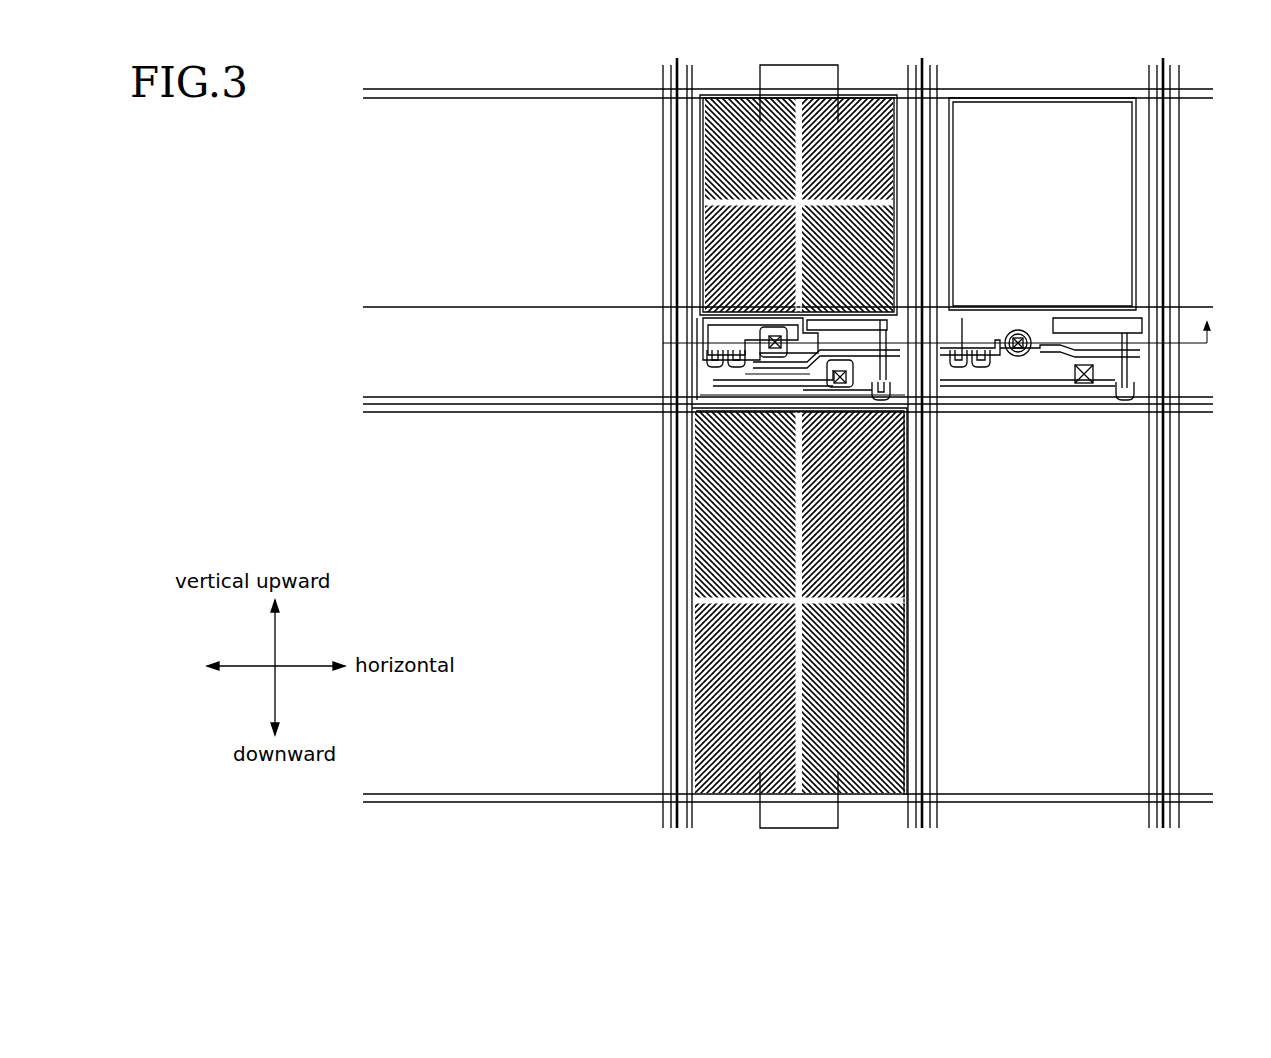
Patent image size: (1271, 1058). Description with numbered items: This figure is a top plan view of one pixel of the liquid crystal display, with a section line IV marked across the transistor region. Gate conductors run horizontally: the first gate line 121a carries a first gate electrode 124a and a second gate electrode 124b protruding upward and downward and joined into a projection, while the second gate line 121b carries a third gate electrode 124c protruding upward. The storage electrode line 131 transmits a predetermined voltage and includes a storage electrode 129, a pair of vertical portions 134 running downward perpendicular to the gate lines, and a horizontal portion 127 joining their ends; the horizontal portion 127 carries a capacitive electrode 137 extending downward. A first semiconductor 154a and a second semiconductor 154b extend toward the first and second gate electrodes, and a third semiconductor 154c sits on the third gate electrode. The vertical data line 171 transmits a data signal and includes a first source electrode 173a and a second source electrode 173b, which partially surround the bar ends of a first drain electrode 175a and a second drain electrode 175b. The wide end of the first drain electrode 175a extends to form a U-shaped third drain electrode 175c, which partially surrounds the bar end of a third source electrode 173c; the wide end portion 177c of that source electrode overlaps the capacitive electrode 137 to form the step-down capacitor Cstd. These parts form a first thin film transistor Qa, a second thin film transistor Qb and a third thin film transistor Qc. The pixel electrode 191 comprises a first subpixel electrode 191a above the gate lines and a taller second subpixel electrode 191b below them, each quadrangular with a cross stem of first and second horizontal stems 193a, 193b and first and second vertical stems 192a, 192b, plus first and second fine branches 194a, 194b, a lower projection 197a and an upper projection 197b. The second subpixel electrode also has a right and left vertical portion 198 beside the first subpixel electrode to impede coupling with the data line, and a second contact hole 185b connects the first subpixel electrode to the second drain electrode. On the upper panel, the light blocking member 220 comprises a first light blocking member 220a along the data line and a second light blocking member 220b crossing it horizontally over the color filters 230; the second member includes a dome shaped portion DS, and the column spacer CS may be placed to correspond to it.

The first gate line 121a is at (1030, 407).
The second gate line 121b is at (1100, 407).
The first gate electrode 124a is at (745, 330).
The second gate electrode 124b is at (700, 400).
The third gate electrode 124c is at (955, 412).
The horizontal portion 127 is at (705, 330).
The storage electrode 129 is at (918, 116).
The storage electrode line 131 is at (855, 96).
The vertical portions 134 is at (922, 172).
The capacitive electrode 137 is at (893, 330).
The first semiconductor 154a is at (755, 408).
The second semiconductor 154b is at (720, 362).
The third semiconductor 154c is at (915, 430).
The data line 171 is at (678, 121).
The first source electrode 173a is at (748, 340).
The second source electrode 173b is at (715, 370).
The third source electrode 173c is at (912, 425).
The first drain electrode 175a is at (745, 408).
The second drain electrode 175b is at (740, 352).
The third drain electrode 175c is at (960, 338).
The wide end portion 177c is at (895, 335).
The second contact hole 185b is at (770, 410).
The pixel electrode 191 is at (795, 445).
The first subpixel electrode 191a is at (775, 422).
The second subpixel electrode 191b is at (775, 601).
The first vertical stem 192a is at (735, 185).
The second vertical stem 192b is at (805, 566).
The first horizontal stem 193a is at (895, 198).
The second horizontal stem 193b is at (880, 602).
The first fine branches 194a is at (793, 178).
The second fine branches 194b is at (703, 547).
The lower projection 197a is at (790, 412).
The upper projection 197b is at (910, 440).
The right and left vertical portion 198 is at (923, 224).
The light blocking member 220 is at (933, 443).
The first light blocking member 220a is at (932, 142).
The second light blocking member 220b is at (1108, 305).
The color filters 230 is at (681, 145).
The first thin film transistor Qa is at (740, 338).
The second thin film transistor Qb is at (715, 355).
The third thin film transistor Qc is at (920, 420).
The step-down capacitor Cstd is at (885, 318).
The dome shaped portion DS is at (1030, 332).
The column spacer CS is at (1032, 343).
The section line IV is at (939, 321).